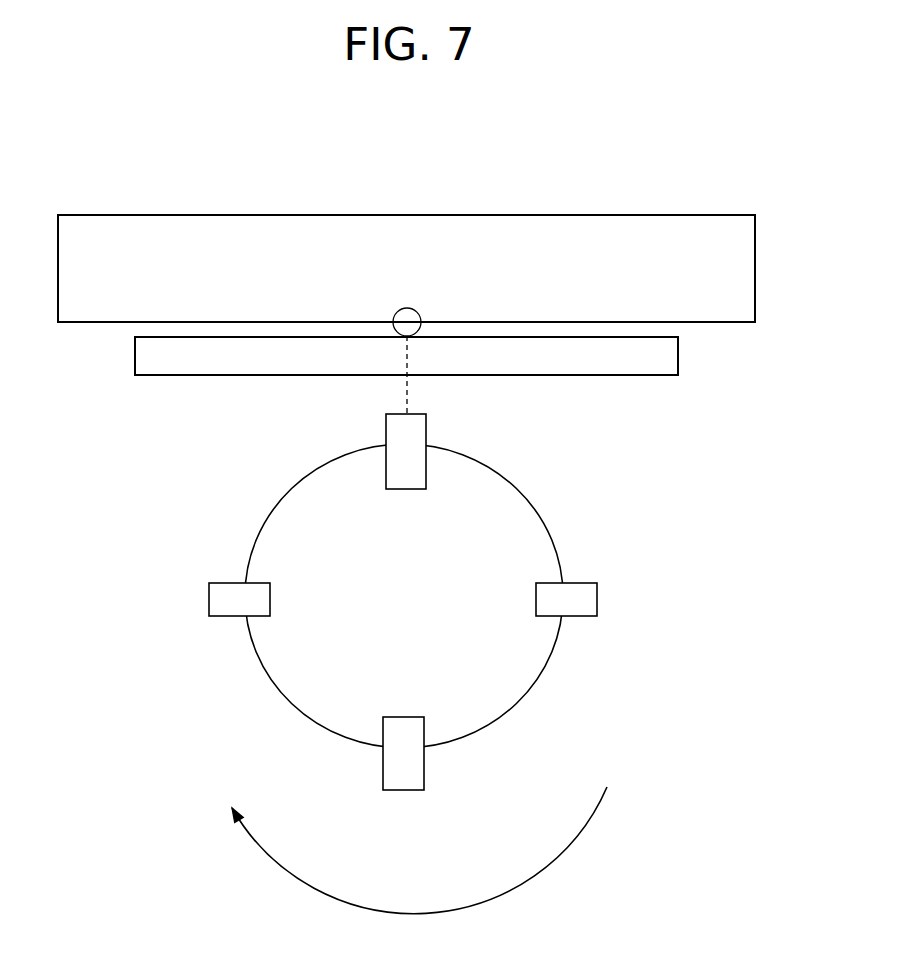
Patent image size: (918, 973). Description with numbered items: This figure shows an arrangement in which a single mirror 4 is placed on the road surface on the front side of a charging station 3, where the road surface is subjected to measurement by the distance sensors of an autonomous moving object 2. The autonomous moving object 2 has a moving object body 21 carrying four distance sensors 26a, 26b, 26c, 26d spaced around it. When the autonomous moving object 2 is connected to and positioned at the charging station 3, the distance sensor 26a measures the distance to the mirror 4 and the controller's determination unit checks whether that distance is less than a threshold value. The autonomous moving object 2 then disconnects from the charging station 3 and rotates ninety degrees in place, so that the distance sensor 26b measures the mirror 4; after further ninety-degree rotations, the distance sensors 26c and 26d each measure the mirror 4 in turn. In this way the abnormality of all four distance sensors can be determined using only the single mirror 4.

The autonomous moving object 2 is at (391, 622).
The charging station 3 is at (592, 232).
The mirror 4 is at (145, 357).
The moving object body 21 is at (515, 707).
The distance sensor 26a is at (420, 427).
The distance sensor 26b is at (230, 588).
The distance sensor 26c is at (393, 770).
The distance sensor 26d is at (580, 590).